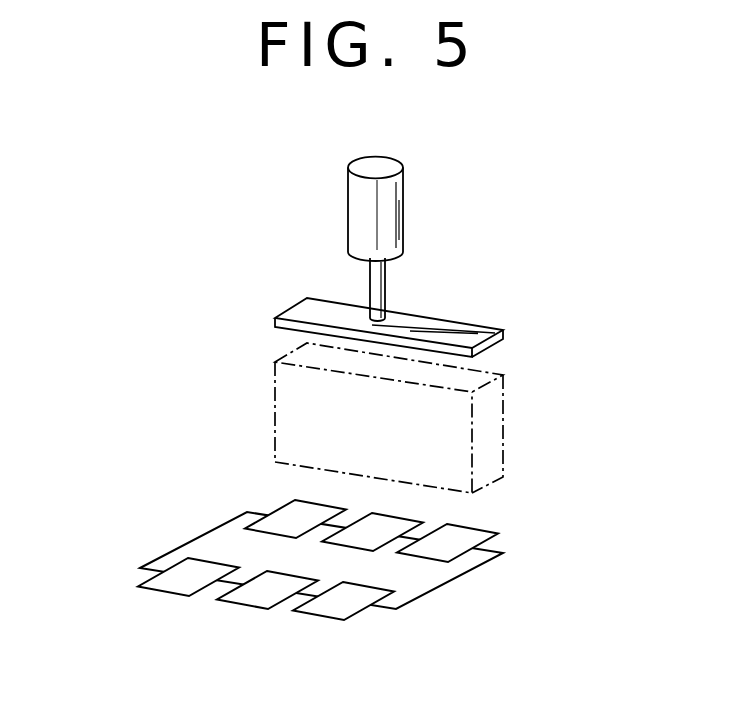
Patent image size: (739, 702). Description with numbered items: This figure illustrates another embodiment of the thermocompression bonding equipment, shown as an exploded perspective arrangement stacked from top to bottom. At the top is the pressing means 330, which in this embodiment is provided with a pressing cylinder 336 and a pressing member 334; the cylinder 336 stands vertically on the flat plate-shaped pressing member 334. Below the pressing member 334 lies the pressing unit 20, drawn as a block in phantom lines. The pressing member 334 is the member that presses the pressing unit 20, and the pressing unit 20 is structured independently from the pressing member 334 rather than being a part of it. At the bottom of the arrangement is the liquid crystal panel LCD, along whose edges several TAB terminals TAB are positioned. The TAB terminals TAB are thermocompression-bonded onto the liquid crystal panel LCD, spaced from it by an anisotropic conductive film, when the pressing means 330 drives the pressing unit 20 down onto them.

The pressing means 330 is at (144, 198).
The pressing cylinder 336 is at (355, 215).
The pressing member 334 is at (300, 306).
The pressing unit 20 is at (490, 416).
The TAB terminals TAB is at (470, 536).
The liquid crystal panel LCD is at (433, 578).